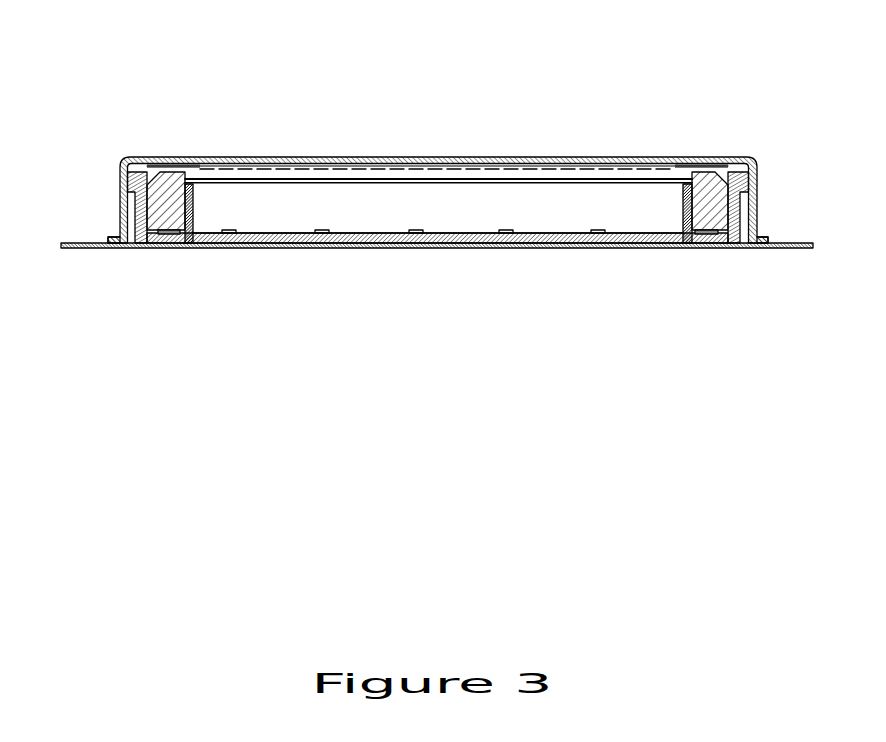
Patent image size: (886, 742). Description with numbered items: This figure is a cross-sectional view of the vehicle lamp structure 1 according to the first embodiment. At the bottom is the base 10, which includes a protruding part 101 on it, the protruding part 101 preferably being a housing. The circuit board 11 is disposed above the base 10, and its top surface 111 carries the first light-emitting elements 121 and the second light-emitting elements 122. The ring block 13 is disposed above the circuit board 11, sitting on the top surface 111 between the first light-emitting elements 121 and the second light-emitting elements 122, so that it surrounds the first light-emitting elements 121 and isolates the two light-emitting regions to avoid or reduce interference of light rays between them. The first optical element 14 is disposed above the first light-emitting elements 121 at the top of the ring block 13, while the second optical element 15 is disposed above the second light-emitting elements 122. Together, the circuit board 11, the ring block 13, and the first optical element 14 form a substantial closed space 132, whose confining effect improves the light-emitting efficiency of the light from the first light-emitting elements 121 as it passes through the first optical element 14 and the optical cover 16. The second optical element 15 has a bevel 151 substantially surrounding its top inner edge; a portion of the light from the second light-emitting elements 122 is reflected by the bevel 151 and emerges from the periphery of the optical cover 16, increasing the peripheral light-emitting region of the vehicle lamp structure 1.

The vehicle lamp structure 1 is at (433, 86).
The base 10 is at (68, 248).
The circuit board 11 is at (163, 243).
The top surface 111 is at (277, 233).
The first light-emitting element 121 is at (248, 245).
The second light-emitting element 122 is at (147, 217).
The ring block 13 is at (697, 245).
The substantial closed space 132 is at (468, 207).
The first optical element 14 is at (683, 158).
The second optical element 15 is at (200, 180).
The bevel 151 is at (140, 158).
The optical cover 16 is at (737, 156).
The protruding part 101 is at (742, 229).